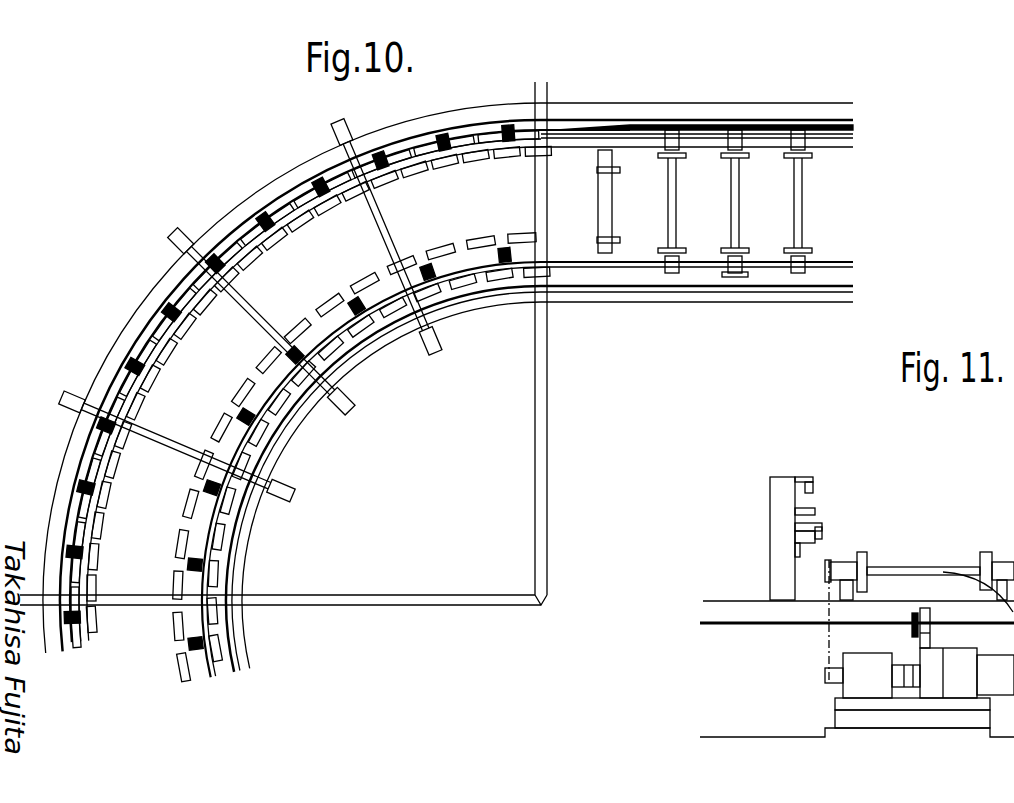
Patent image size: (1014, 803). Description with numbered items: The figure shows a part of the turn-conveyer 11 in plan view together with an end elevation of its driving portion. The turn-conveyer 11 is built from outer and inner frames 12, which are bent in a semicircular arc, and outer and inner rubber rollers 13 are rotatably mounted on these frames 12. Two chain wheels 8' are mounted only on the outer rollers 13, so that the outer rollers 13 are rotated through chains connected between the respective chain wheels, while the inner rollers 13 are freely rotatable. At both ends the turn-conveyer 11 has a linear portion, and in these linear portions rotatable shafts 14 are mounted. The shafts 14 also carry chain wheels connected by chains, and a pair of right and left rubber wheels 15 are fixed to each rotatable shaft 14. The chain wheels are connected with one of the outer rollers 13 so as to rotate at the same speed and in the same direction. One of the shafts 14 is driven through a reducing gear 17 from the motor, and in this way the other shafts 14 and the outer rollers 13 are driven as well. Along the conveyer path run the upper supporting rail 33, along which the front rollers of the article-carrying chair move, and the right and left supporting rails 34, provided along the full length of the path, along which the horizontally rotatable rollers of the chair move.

In FIG. 10, the chain wheel 8' is at (461, 372).
In FIG. 10, the turn-conveyer 11 is at (143, 645).
In FIG. 10, the outer and inner frames 12 is at (243, 253).
In FIG. 10, the rubber roller 13 is at (193, 320).
In FIG. 10, the rotatable shaft 14 is at (798, 210).
In FIG. 10, the rubber wheel 15 is at (783, 140).
In FIG. 11, the rubber wheel 15 is at (985, 552).
In FIG. 11, the reducing gear 17 is at (858, 678).
In FIG. 11, the upper supporting rail 33 is at (805, 497).
In FIG. 11, the supporting rail 34 is at (797, 530).